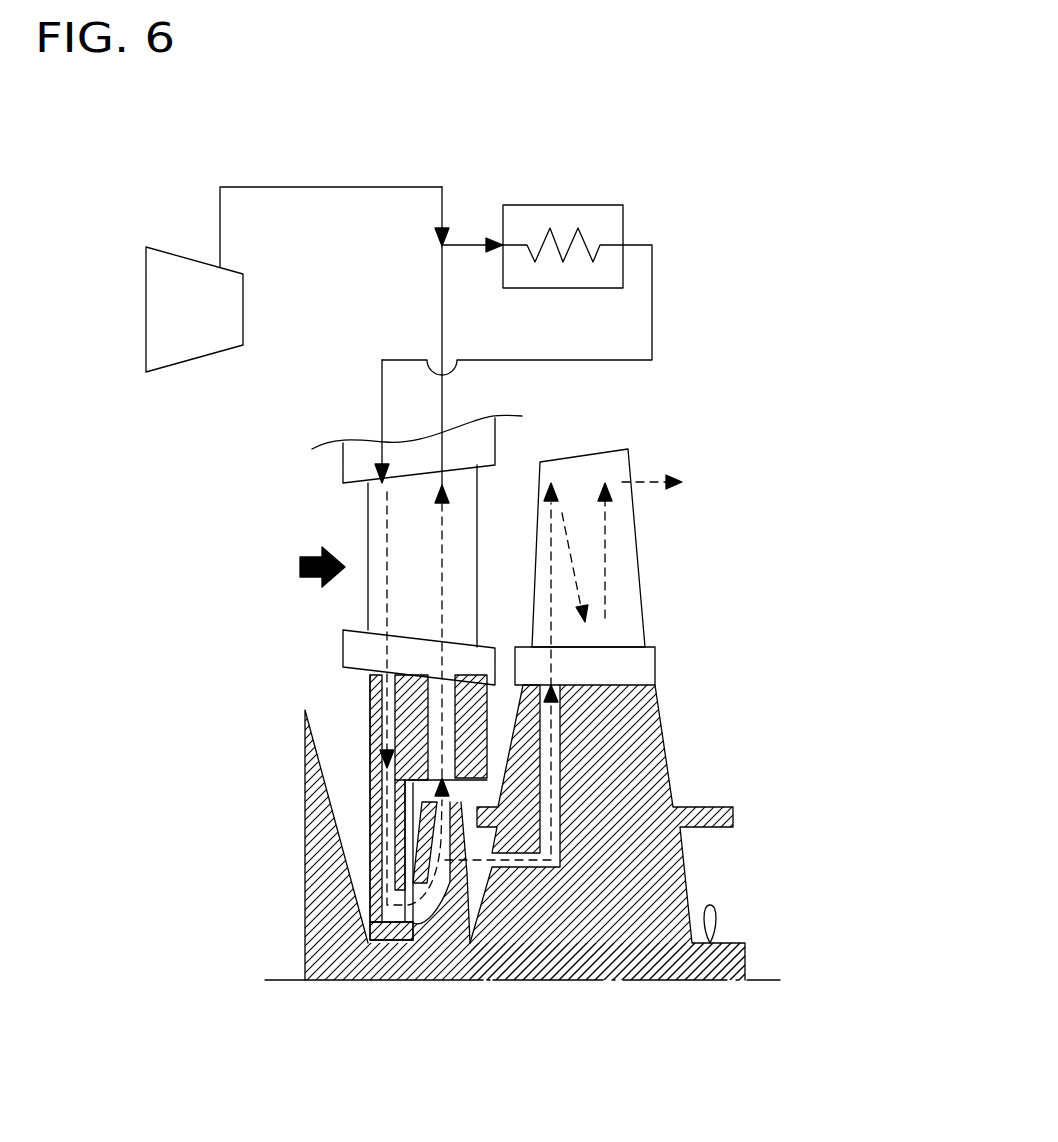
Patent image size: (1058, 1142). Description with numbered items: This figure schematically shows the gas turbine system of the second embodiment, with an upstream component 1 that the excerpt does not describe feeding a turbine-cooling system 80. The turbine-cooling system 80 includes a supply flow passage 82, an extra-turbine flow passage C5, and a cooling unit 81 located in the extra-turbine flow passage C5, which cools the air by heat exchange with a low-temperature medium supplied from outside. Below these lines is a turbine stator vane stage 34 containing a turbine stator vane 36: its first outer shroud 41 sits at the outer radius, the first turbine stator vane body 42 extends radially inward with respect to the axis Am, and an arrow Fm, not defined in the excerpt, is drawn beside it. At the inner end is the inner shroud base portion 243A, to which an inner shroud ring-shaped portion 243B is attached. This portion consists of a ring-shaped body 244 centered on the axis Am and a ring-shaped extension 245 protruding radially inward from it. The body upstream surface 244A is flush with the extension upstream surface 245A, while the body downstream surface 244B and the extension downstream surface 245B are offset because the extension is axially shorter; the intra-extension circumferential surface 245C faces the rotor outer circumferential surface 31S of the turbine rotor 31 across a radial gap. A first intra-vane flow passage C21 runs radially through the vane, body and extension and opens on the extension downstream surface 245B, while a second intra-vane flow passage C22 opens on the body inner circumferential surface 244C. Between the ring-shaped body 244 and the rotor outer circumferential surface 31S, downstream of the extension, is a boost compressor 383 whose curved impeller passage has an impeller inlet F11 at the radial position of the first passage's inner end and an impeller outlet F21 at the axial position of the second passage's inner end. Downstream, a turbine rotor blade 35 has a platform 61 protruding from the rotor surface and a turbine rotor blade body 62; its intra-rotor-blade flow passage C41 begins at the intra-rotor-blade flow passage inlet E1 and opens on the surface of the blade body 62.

The compressor 1 is at (146, 247).
The turbine-cooling system 80 is at (481, 275).
The cooling unit 81 is at (530, 205).
The supply flow passage 82 is at (267, 187).
The extra-turbine flow passage C5 is at (652, 290).
The first outer shroud 41 is at (355, 453).
The turbine stator vane stage 34 is at (430, 643).
The turbine stator vane 36 is at (152, 472).
The first turbine stator vane body 42 is at (377, 510).
The inner shroud base portion 243A is at (343, 648).
The first intra-vane flow passage C21 is at (387, 594).
The second intra-vane flow passage C22 is at (445, 528).
The main flow direction Fm is at (319, 551).
The turbine rotor blade 35 is at (659, 579).
The turbine rotor blade body 62 is at (628, 540).
The platform 61 is at (645, 710).
The intra-rotor-blade flow passage C41 is at (562, 848).
The ring-shaped body 244 is at (473, 782).
The body upstream surface 244A is at (396, 712).
The body downstream surface 244B is at (488, 722).
The body inner circumferential surface 244C is at (500, 804).
The ring-shaped extension 245 is at (277, 886).
The extension upstream surface 245A is at (367, 923).
The extension downstream surface 245B is at (410, 850).
The intra-extension circumferential surface 245C is at (395, 940).
The turbine rotor 31 is at (643, 960).
The rotor outer circumferential surface 31S is at (710, 943).
The boost compressor 383 is at (456, 944).
The inner shroud ring-shaped portion 243B is at (280, 689).
The impeller outlet F21 is at (371, 832).
The impeller inlet F11 is at (400, 942).
The intra-rotor-blade flow passage inlet E1 is at (467, 872).
The axis Am is at (782, 978).